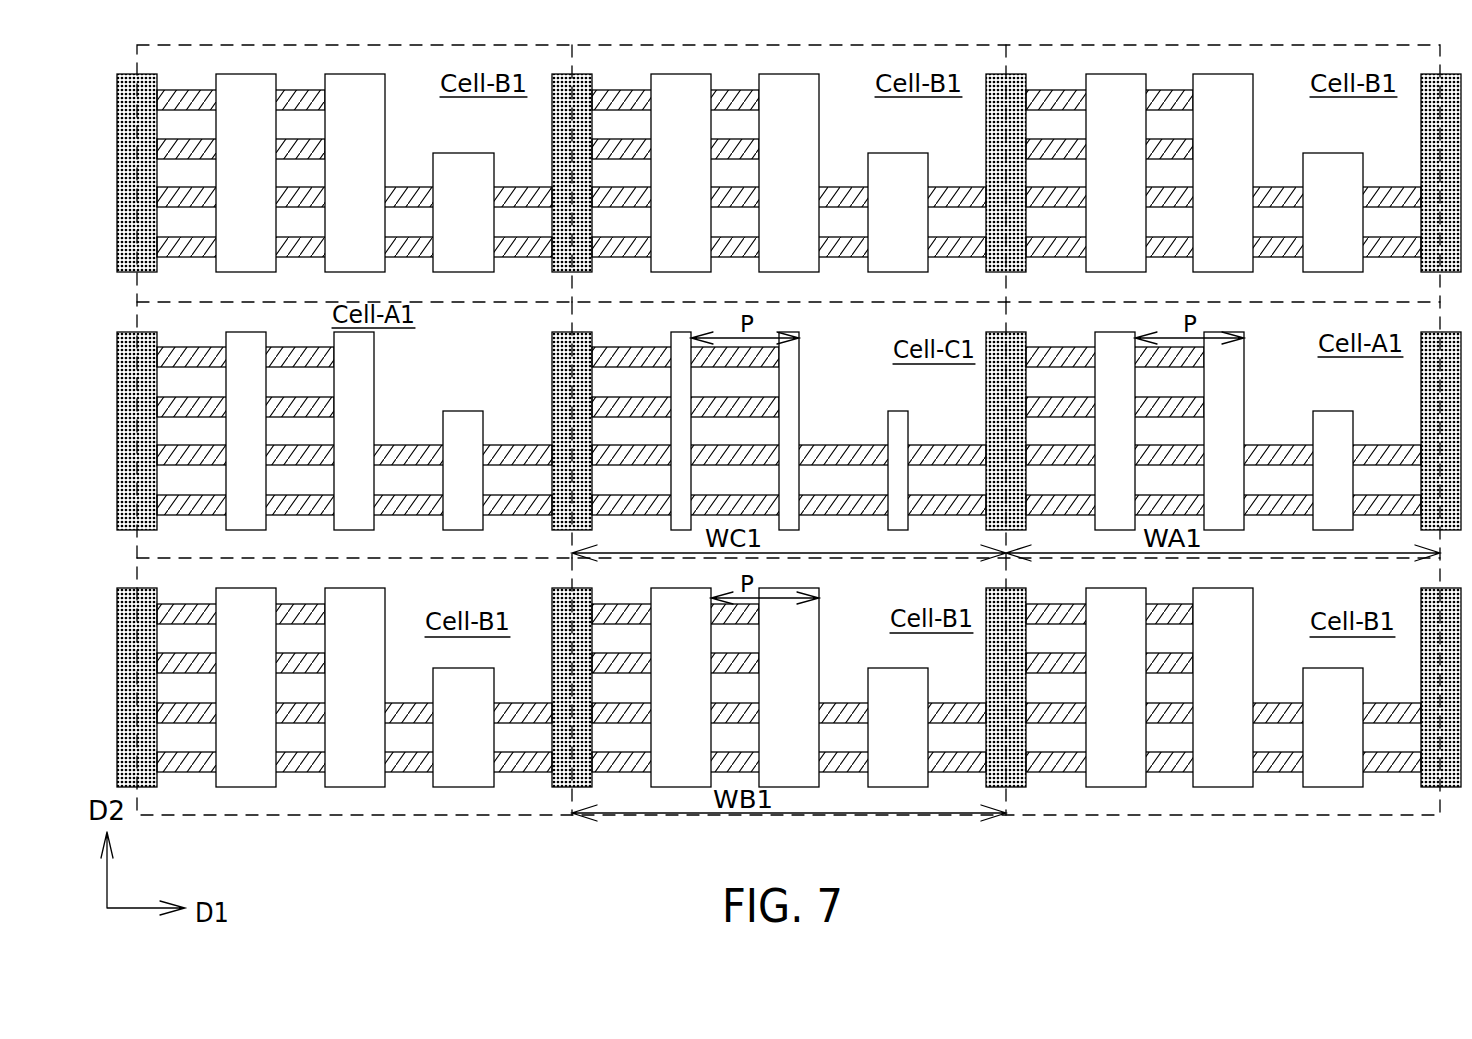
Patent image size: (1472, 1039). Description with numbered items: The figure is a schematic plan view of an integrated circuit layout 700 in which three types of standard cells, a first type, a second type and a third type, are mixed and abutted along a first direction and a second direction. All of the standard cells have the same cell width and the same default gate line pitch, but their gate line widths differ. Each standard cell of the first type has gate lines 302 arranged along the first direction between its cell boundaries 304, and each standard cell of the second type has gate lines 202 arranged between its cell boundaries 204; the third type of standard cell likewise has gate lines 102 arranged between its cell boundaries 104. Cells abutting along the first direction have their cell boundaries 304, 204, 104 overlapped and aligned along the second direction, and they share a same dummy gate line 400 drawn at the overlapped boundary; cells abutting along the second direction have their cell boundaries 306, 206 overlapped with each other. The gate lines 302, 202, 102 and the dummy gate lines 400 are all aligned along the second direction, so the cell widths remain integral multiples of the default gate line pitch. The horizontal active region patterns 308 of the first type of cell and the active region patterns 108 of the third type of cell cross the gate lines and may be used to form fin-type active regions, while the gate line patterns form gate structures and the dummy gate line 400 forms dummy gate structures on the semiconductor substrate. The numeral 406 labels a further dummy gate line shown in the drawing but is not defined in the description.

The gate line 102 is at (1218, 331).
The cell boundary 104 is at (570, 323).
The active region pattern 108 is at (1283, 450).
The gate line 202 is at (677, 588).
The cell boundary 204 is at (572, 579).
The cell boundary 206 is at (928, 305).
The gate line 302 is at (678, 331).
The cell boundary 304 is at (809, 430).
The cell boundary 306 is at (788, 451).
The active region pattern 308 is at (845, 450).
The dummy gate line 400 is at (560, 363).
The power rail 406 is at (995, 385).
The integrated circuit layout 700 is at (1235, 820).